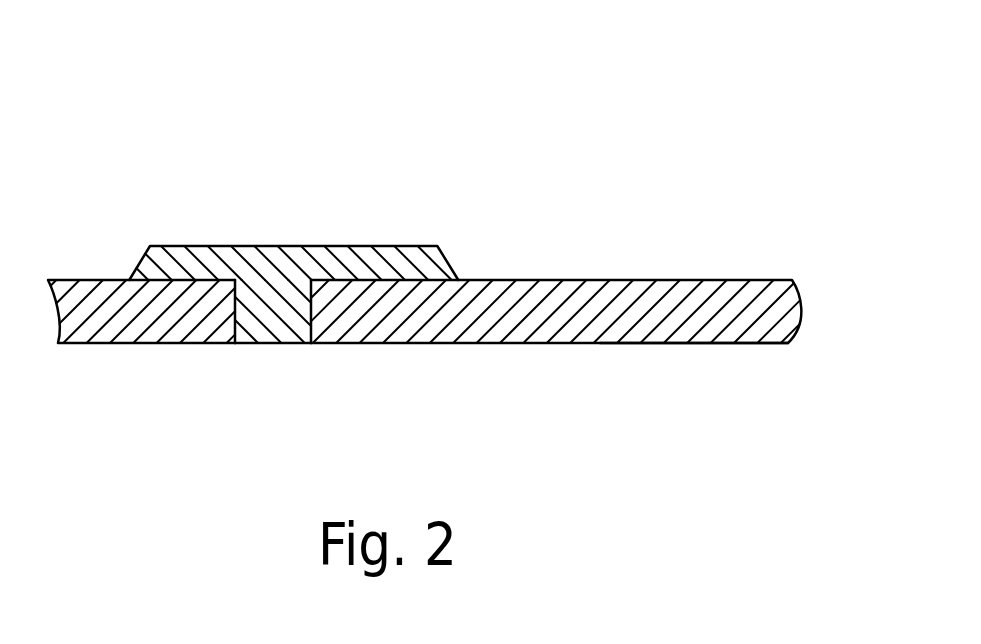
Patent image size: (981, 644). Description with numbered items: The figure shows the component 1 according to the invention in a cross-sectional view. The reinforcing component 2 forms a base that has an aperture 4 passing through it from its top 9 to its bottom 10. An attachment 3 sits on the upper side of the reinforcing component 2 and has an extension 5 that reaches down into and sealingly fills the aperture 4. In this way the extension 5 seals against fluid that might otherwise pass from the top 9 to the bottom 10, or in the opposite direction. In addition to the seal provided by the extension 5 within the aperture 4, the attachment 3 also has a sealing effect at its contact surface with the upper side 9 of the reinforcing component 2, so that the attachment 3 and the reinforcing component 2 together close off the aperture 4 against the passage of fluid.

The component 1 is at (571, 235).
The reinforcing component 2 is at (120, 343).
The attachment 3 is at (198, 245).
The aperture 4 is at (311, 323).
The extension 5 is at (260, 343).
The top 9 is at (665, 280).
The bottom 10 is at (672, 343).